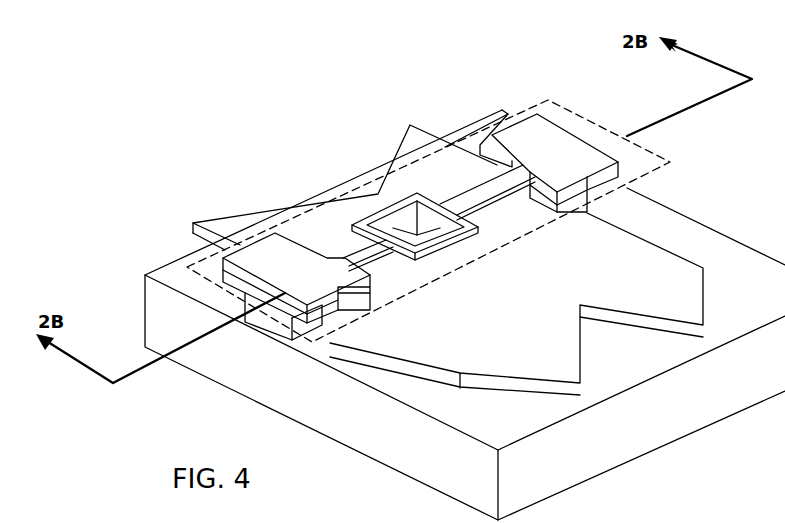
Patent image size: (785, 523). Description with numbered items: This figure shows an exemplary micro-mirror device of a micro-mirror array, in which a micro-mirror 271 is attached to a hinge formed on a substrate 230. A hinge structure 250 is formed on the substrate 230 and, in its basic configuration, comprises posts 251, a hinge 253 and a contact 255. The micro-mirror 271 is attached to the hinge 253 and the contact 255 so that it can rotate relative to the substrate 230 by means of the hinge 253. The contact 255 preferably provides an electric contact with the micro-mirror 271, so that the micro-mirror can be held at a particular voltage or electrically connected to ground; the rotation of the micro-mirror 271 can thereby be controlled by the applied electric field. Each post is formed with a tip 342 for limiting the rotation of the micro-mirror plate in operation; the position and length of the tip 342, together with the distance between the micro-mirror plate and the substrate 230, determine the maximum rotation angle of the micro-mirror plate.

The substrate 230 is at (638, 432).
The micro-mirror 271 is at (670, 307).
The hinge structure 250 is at (655, 158).
The posts 251 is at (550, 137).
The hinge 253 is at (477, 208).
The contact 255 is at (412, 236).
The tip 342 is at (370, 292).